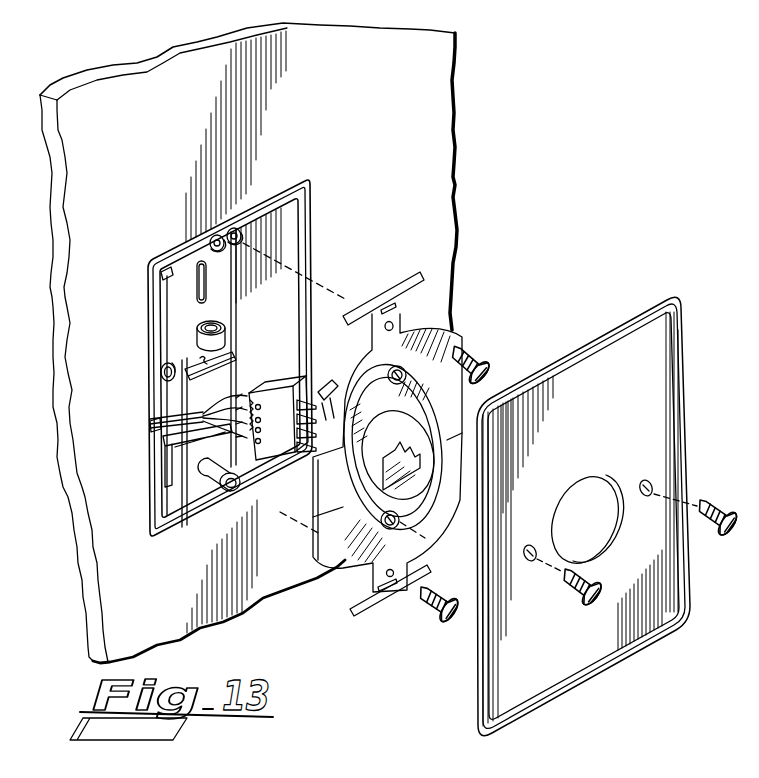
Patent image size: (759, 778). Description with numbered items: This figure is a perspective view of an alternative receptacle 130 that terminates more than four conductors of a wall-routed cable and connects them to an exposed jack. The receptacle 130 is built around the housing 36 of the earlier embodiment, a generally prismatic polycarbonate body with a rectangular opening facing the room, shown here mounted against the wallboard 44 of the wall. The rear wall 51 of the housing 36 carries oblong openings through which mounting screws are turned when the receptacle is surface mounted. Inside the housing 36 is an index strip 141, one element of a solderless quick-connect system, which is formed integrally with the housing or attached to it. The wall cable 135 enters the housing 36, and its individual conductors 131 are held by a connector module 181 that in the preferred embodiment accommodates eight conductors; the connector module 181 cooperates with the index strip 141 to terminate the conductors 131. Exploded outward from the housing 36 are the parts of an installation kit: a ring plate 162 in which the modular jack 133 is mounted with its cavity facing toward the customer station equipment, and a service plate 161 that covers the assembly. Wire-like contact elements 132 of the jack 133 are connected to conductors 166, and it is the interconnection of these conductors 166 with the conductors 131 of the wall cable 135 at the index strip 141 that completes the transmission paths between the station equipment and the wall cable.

The wallboard 44 is at (435, 75).
The housing 36 is at (162, 255).
The receptacle 130 is at (318, 197).
The rear wall 51 is at (180, 314).
The index strip 141 is at (213, 367).
The connector module 181 is at (285, 392).
The conductors 166 is at (330, 377).
The wall cable 135 is at (180, 423).
The conductors 131 is at (212, 432).
The ring plate 162 is at (453, 331).
The jack 133 is at (474, 522).
The contact elements 132 is at (397, 457).
The service plate 161 is at (648, 363).